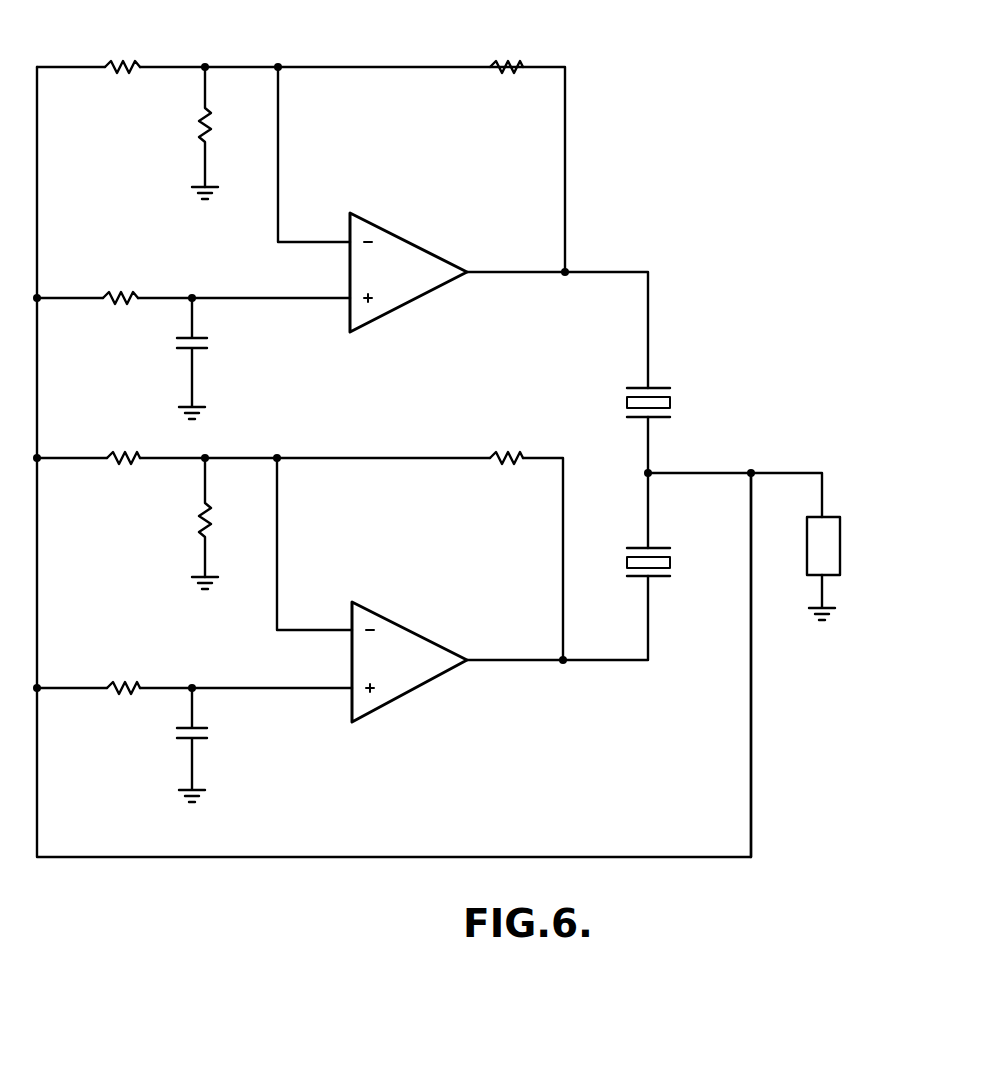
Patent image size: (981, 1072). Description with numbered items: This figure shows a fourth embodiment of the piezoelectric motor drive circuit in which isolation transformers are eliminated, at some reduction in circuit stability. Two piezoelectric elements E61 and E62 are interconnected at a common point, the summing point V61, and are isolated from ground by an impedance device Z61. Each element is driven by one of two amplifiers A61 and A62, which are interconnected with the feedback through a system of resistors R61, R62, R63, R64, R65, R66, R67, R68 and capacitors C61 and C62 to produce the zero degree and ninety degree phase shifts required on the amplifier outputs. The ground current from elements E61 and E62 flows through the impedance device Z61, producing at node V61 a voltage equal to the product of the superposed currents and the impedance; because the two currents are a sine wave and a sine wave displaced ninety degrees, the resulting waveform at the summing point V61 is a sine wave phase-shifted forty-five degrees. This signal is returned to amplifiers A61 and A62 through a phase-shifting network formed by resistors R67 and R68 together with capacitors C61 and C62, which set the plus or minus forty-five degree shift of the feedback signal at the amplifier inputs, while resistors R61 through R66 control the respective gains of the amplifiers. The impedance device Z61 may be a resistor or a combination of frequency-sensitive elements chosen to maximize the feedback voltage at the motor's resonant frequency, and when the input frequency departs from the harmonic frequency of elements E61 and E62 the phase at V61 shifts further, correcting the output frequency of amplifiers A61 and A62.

The resistor R61 is at (158, 40).
The resistor R62 is at (533, 40).
The resistor R63 is at (203, 108).
The resistor R64 is at (150, 430).
The resistor R65 is at (533, 430).
The resistor R66 is at (205, 505).
The resistor R67 is at (150, 270).
The resistor R68 is at (145, 655).
The capacitor C61 is at (207, 338).
The capacitor C62 is at (207, 728).
The amplifier A61 is at (437, 255).
The amplifier A62 is at (437, 645).
The piezoelectric element E61 is at (668, 388).
The piezoelectric element E62 is at (668, 548).
The impedance device Z61 is at (838, 515).
The summing point V61 is at (751, 765).